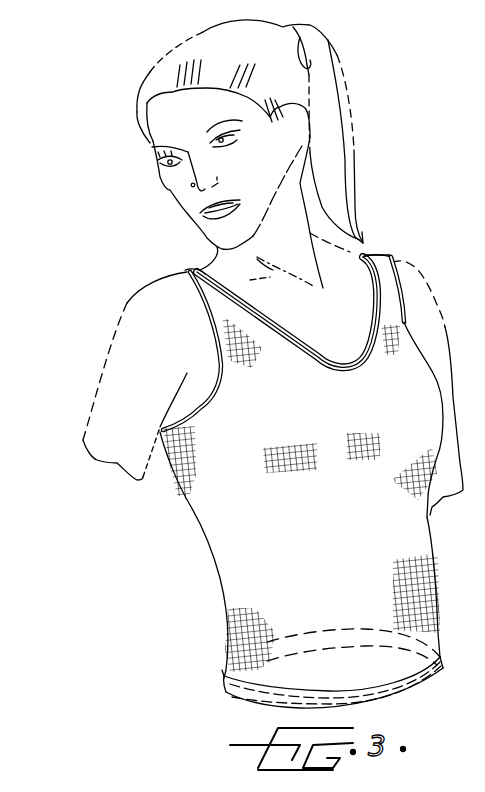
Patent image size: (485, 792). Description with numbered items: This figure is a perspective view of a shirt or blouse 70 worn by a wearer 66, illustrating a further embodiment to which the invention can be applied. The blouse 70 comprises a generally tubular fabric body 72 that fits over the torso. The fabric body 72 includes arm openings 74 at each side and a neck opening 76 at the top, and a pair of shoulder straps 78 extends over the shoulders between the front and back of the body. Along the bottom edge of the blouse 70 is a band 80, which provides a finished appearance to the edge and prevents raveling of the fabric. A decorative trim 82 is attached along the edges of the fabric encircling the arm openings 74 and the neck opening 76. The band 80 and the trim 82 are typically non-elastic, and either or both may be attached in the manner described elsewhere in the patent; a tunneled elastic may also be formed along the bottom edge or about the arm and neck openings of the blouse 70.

The wearer 66 is at (282, 267).
The shirt or blouse 70 is at (148, 600).
The tubular fabric body 72 is at (243, 585).
The arm openings 74 is at (200, 356).
The neck opening 76 is at (356, 262).
The shoulder straps 78 is at (203, 272).
The band 80 is at (222, 683).
The decorative trim 82 is at (287, 337).